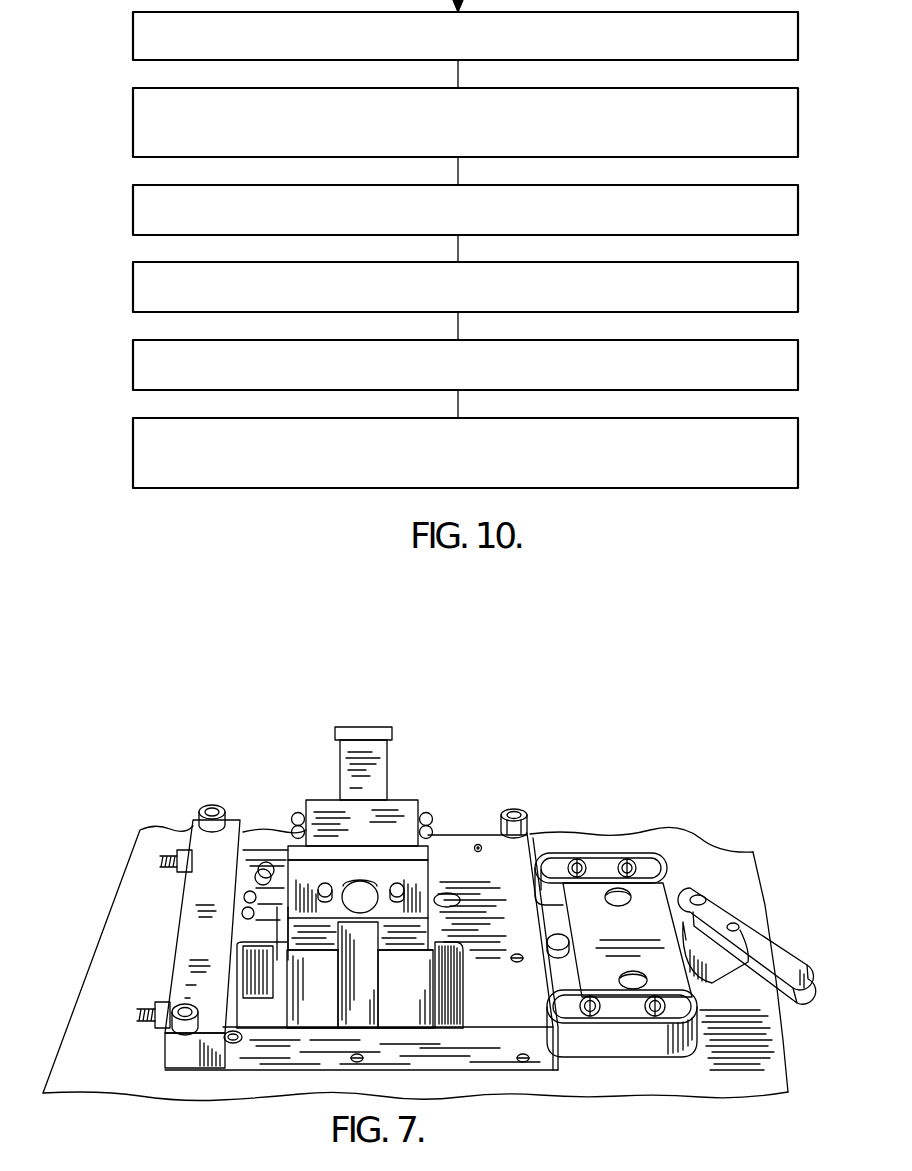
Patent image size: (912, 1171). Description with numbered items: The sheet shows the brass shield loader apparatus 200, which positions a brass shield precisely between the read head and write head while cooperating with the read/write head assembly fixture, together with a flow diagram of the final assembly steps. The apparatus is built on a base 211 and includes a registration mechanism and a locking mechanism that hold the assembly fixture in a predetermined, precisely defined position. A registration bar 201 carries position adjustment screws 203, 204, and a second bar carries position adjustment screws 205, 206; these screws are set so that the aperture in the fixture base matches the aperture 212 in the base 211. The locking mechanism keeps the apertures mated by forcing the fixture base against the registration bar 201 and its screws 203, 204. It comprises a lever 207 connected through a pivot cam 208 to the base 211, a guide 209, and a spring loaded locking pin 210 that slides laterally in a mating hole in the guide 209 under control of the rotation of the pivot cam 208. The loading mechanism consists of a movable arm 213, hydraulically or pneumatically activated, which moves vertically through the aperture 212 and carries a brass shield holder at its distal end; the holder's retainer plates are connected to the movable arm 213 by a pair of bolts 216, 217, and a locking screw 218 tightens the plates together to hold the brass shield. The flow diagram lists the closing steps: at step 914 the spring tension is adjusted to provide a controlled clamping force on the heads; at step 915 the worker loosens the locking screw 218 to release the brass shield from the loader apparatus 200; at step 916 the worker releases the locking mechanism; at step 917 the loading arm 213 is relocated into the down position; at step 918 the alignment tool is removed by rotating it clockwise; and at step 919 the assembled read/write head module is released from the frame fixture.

In FIG. 7, the brass shield loader apparatus 200 is at (524, 792).
In FIG. 7, the registration bar 201 is at (193, 930).
In FIG. 7, the position adjustment screw 203 is at (150, 1023).
In FIG. 7, the position adjustment screw 204 is at (160, 860).
In FIG. 7, the position adjustment screw 205 is at (268, 862).
In FIG. 7, the position adjustment screw 206 is at (478, 845).
In FIG. 7, the lever 207 is at (762, 945).
In FIG. 7, the pivot cam 208 is at (763, 985).
In FIG. 7, the guide 209 is at (650, 893).
In FIG. 7, the spring loaded locking pin 210 is at (563, 947).
In FIG. 7, the base 211 is at (147, 837).
In FIG. 7, the aperture 212 is at (453, 1018).
In FIG. 7, the movable arm 213 is at (315, 1012).
In FIG. 7, the bolt 216 is at (312, 893).
In FIG. 7, the bolt 217 is at (400, 880).
In FIG. 7, the locking screw 218 is at (353, 877).
In FIG. 10, the step 914 is at (133, 36).
In FIG. 10, the step 915 is at (133, 120).
In FIG. 10, the step 916 is at (133, 218).
In FIG. 10, the step 917 is at (133, 288).
In FIG. 10, the step 918 is at (133, 360).
In FIG. 10, the step 919 is at (133, 446).